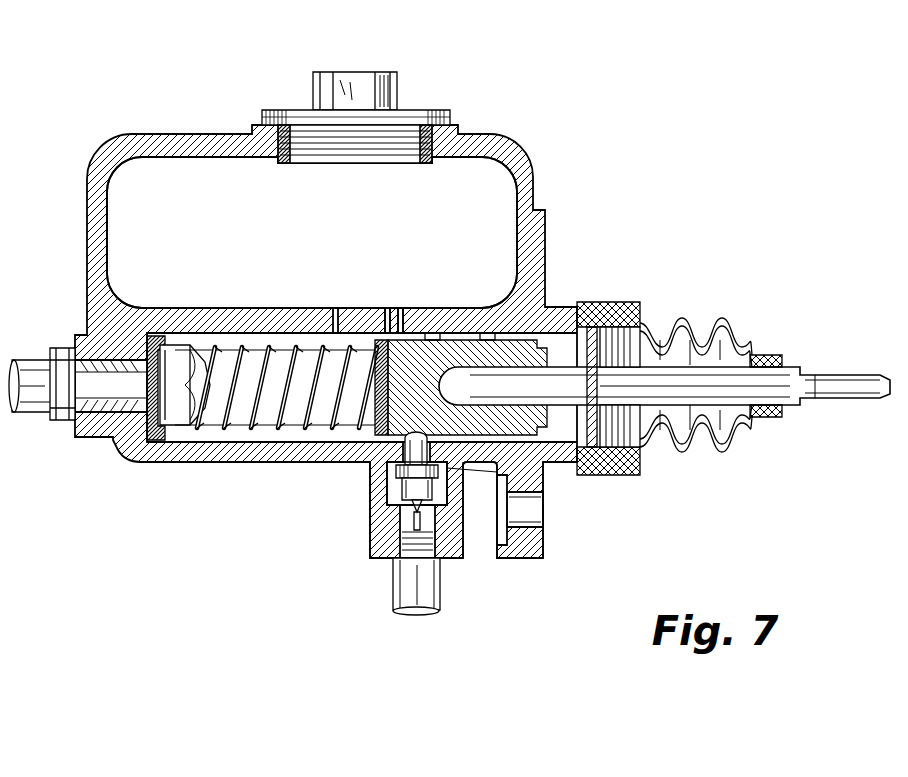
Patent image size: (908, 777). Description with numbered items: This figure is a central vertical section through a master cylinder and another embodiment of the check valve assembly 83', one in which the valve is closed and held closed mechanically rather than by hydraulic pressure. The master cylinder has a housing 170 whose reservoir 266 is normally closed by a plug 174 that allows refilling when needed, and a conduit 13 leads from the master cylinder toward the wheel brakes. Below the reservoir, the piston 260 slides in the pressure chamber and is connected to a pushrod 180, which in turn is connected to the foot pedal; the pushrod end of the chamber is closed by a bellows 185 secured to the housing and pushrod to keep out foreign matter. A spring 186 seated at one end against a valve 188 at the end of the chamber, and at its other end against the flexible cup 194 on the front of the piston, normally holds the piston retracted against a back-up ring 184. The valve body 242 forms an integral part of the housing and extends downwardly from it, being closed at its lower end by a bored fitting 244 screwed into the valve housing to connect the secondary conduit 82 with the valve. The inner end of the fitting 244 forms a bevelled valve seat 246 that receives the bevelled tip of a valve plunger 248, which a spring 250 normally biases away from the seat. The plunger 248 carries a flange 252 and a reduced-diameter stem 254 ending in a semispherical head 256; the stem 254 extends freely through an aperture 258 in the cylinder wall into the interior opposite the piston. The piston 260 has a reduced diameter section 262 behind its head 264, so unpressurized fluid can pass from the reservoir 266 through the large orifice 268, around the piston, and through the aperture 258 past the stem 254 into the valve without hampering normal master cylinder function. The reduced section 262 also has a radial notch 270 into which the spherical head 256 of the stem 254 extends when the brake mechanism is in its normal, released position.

The conduit 13 is at (31, 372).
The additional conduit 82 is at (441, 590).
The check valve assembly 83' is at (480, 496).
The housing 170 is at (545, 244).
The plug 174 is at (288, 118).
The pushrod 180 is at (820, 372).
The back-up ring 184 is at (630, 303).
The boot 185 is at (730, 320).
The spring 186 is at (225, 330).
The valve 188 is at (185, 330).
The piston seal 194 is at (335, 318).
The valve body 242 is at (372, 470).
The bored fitting 244 is at (378, 540).
The bevelled valve seat 246 is at (412, 505).
The valve plunger 248 is at (524, 509).
The spring 250 is at (402, 492).
The flange 252 is at (498, 478).
The stem 254 is at (440, 464).
The semispherical head 256 is at (424, 436).
The aperture 258 is at (396, 472).
The piston 260 is at (453, 320).
The reduced diameter section 262 is at (485, 320).
The head 264 is at (384, 316).
The reservoir 266 is at (274, 249).
The large orifice 268 is at (399, 316).
The radial notch 270 is at (432, 320).